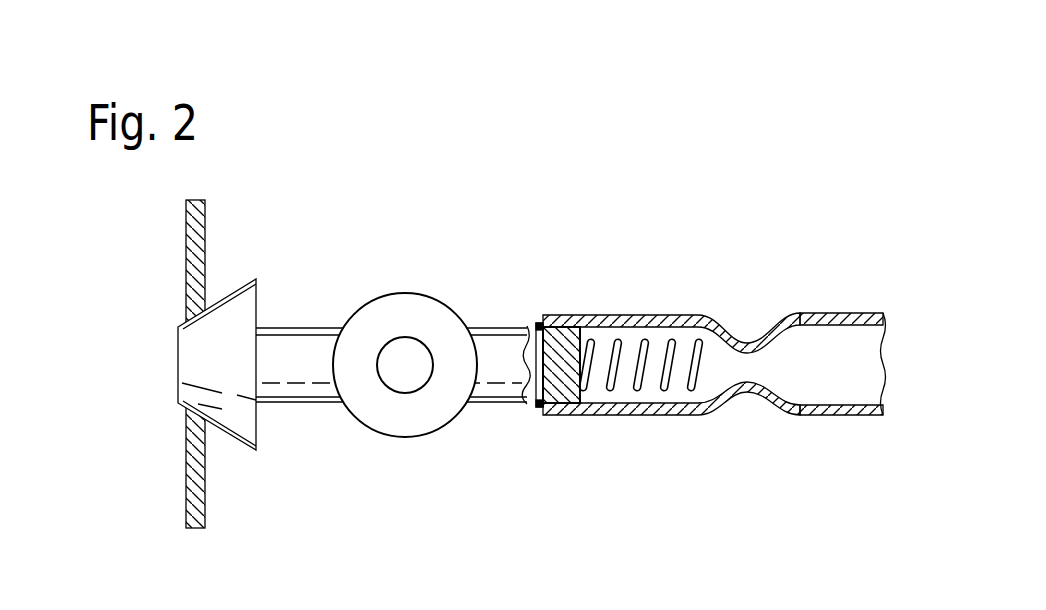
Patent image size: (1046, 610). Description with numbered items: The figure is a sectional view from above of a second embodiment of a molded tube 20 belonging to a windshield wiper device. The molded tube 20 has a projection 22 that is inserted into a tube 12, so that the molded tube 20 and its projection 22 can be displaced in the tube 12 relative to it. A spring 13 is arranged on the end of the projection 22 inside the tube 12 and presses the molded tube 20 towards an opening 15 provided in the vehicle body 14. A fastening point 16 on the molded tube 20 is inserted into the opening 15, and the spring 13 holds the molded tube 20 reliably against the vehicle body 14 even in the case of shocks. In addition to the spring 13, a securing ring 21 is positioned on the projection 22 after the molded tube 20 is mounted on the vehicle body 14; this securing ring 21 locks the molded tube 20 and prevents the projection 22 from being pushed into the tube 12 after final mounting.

The tube 12 is at (837, 317).
The spring 13 is at (707, 317).
The vehicle body 14 is at (197, 433).
The opening 15 is at (186, 318).
The fastening point 16 is at (232, 313).
The molded tube 20 is at (402, 307).
The securing ring 21 is at (542, 410).
The projection 22 is at (492, 357).